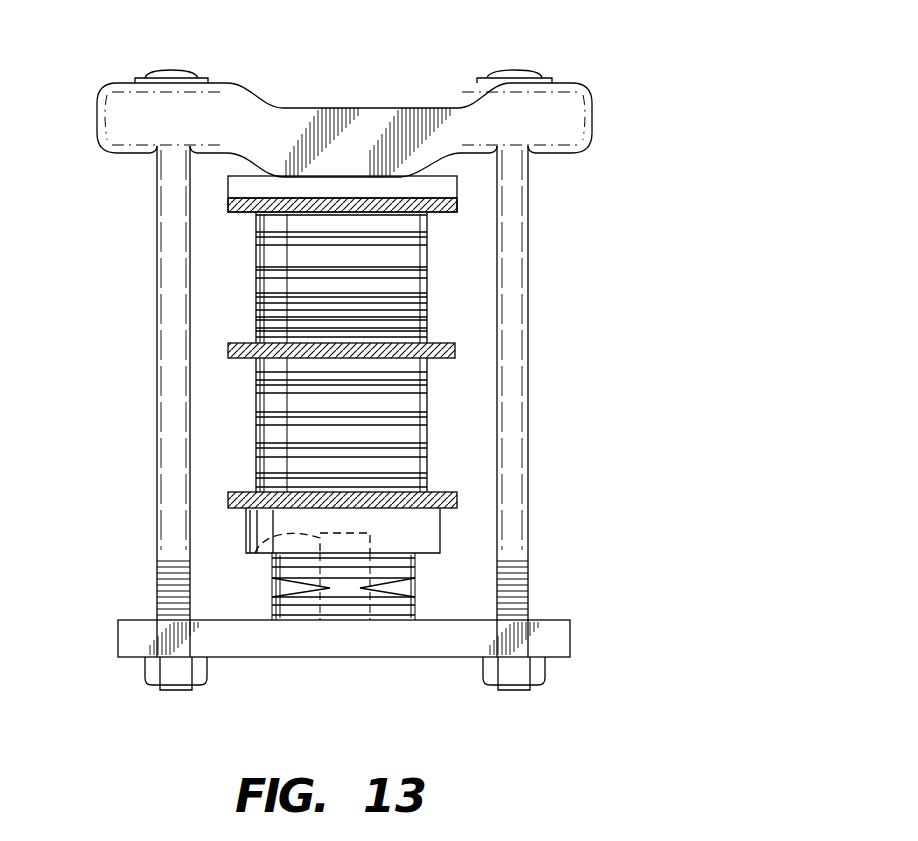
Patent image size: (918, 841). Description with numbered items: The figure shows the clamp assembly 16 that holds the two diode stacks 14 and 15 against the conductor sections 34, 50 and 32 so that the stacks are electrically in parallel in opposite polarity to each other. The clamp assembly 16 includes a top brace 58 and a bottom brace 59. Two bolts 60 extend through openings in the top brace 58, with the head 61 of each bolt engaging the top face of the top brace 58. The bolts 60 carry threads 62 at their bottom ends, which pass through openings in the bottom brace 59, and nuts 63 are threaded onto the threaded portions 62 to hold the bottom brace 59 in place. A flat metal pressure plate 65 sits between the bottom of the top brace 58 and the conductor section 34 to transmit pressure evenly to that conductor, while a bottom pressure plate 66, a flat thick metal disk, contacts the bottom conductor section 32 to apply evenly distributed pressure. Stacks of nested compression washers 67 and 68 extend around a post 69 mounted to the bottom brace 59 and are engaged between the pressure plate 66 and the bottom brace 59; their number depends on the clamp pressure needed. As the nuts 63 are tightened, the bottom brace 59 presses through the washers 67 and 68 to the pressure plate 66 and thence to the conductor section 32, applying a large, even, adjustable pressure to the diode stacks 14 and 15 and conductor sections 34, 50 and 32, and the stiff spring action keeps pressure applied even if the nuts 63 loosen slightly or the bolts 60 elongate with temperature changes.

The diode stack 14 is at (254, 265).
The diode stack 15 is at (254, 435).
The clamp assembly 16 is at (658, 177).
The conductor section 32 is at (458, 492).
The conductor section 34 is at (455, 203).
The conductor section 50 is at (450, 342).
The top brace 58 is at (383, 108).
The bottom brace 59 is at (373, 660).
The bolt 60 is at (152, 352).
The head 61 is at (153, 68).
The threads 62 is at (157, 580).
The nut 63 is at (147, 662).
The pressure plate 65 is at (287, 183).
The bottom pressure plate 66 is at (443, 528).
The compression washer 67 is at (268, 572).
The compression washer 68 is at (418, 590).
The post 69 is at (260, 547).